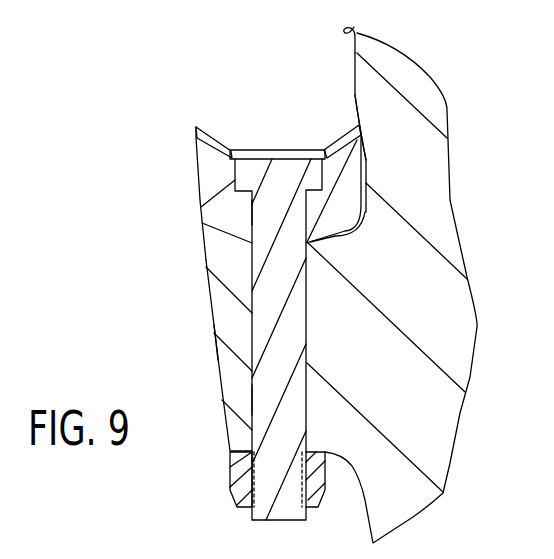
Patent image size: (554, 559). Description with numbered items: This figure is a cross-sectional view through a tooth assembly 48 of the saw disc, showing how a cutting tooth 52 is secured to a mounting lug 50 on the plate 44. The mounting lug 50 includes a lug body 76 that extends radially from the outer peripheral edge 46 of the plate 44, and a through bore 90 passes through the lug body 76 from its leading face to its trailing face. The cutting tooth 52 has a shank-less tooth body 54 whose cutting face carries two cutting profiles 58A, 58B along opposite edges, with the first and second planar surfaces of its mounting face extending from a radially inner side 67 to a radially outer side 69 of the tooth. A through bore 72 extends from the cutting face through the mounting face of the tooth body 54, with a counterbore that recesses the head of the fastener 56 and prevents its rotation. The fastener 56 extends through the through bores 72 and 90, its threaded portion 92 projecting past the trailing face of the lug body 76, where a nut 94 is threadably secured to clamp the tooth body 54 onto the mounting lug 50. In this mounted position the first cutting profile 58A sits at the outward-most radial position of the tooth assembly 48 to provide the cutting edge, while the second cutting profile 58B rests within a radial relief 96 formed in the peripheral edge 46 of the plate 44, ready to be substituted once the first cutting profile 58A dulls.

The plate 44 is at (465, 190).
The peripheral edge 46 is at (354, 27).
The tooth assembly 48 is at (99, 218).
The mounting lug 50 is at (194, 311).
The cutting tooth 52 is at (170, 165).
The tooth body 54 is at (216, 173).
The fastener 56 is at (277, 270).
The first cutting profile 58A is at (218, 140).
The second cutting profile 58B is at (346, 146).
The radially inner side 67 is at (360, 203).
The radially outer side 69 is at (202, 221).
The through bore 72 is at (251, 212).
The lug body 76 is at (232, 341).
The through bore 90 is at (250, 400).
The threaded portion 92 is at (285, 514).
The nut 94 is at (240, 488).
The radial relief 96 is at (366, 162).